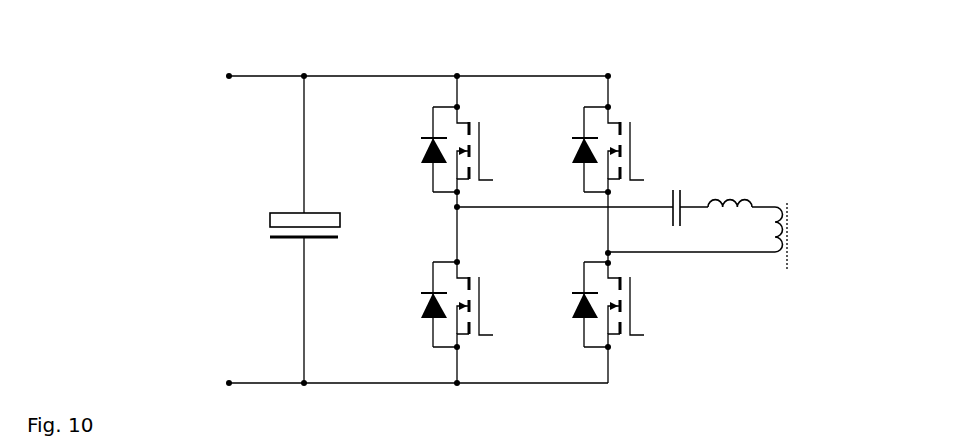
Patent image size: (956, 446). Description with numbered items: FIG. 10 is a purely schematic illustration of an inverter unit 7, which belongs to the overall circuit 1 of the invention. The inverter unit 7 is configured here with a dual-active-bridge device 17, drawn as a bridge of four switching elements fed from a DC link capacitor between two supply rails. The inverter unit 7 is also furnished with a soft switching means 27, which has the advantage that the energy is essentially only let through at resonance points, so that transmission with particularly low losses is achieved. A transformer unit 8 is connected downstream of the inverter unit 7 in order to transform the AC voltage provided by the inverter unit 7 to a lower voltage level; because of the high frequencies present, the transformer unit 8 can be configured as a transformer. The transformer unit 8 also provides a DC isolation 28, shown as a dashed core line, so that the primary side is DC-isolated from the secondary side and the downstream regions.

The power converter circuit 1 is at (66, 71).
The inverter unit 7 is at (83, 119).
The dual-active-bridge device 17 is at (167, 275).
The transformer unit 8 is at (747, 160).
The soft switching means 27 is at (765, 302).
The DC isolation 28 is at (788, 208).